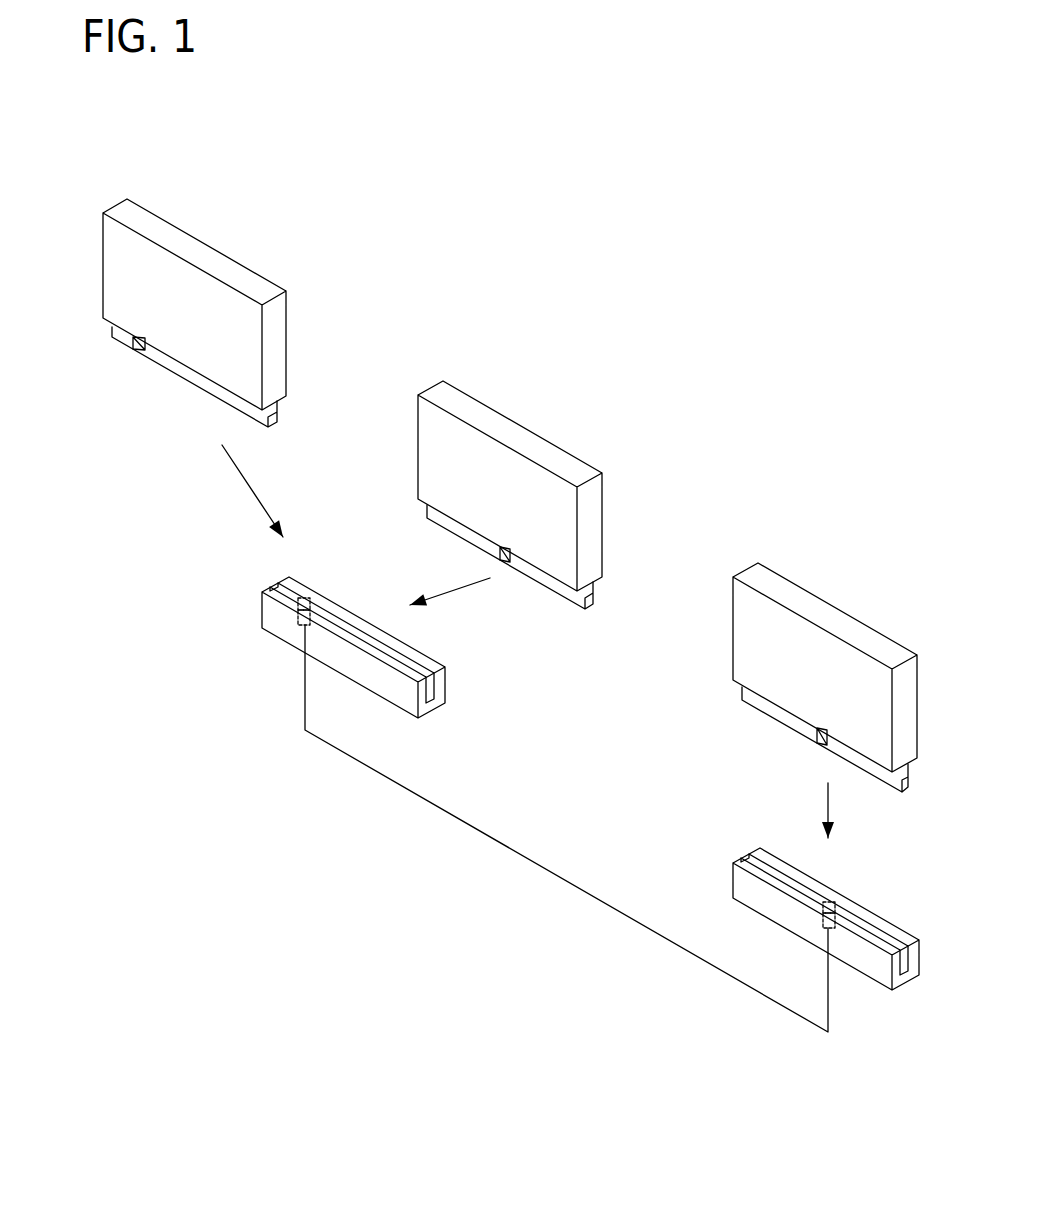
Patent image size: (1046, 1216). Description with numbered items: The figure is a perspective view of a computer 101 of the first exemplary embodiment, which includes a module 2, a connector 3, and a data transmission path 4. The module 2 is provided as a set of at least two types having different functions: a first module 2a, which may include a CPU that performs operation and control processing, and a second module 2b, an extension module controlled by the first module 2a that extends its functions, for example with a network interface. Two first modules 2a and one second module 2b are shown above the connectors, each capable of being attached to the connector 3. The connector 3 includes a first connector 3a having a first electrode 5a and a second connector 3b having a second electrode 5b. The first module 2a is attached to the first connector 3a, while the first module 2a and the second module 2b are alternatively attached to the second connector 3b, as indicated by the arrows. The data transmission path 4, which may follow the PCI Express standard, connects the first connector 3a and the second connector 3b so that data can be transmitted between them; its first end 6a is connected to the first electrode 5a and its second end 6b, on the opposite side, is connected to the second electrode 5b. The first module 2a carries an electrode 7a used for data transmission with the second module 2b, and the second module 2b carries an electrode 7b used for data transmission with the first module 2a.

The computer 101 is at (712, 203).
The module 2 is at (510, 480).
The first module 2a is at (515, 437).
The second module 2b is at (196, 247).
The connector 3 is at (549, 783).
The first connector 3a is at (745, 887).
The second connector 3b is at (270, 620).
The data transmission path 4 is at (572, 885).
The first electrode 5a is at (830, 903).
The second electrode 5b is at (305, 598).
The first end 6a is at (832, 930).
The second end 6b is at (300, 625).
The electrode 7a is at (505, 562).
The electrode 7b is at (140, 352).